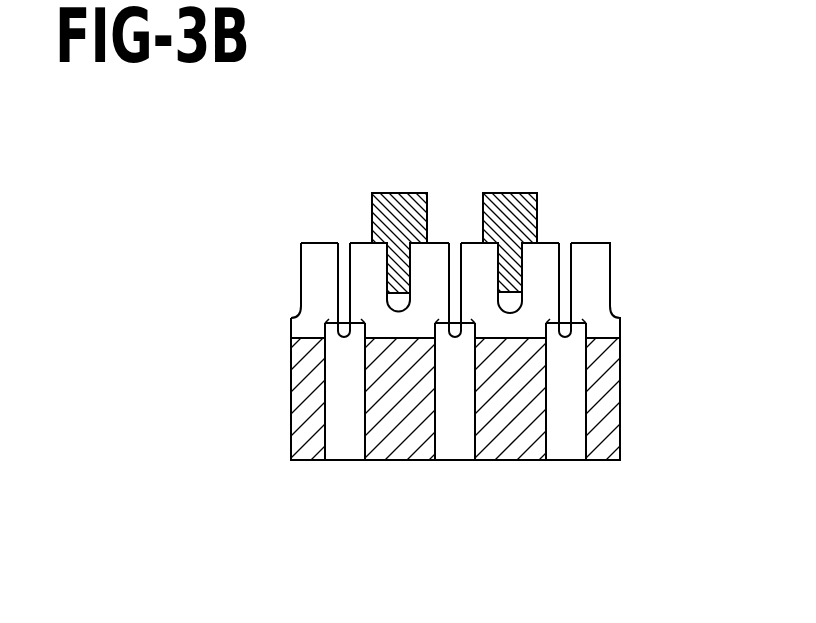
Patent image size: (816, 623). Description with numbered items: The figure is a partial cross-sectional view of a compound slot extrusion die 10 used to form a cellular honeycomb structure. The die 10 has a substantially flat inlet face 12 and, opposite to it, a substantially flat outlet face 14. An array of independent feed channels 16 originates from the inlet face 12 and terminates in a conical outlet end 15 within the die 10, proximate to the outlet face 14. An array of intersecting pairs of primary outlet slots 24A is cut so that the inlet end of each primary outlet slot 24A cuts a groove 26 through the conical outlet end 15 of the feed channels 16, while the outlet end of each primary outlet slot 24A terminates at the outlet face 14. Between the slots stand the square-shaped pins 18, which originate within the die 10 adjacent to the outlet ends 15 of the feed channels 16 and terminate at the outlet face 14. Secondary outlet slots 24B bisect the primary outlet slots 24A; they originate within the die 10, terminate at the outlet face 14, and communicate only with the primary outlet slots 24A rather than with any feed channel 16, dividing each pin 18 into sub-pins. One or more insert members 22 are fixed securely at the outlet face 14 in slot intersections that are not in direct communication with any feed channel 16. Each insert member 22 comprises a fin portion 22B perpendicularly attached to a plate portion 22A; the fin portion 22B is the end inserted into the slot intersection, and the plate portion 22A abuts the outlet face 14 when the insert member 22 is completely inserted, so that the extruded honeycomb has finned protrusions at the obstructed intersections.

The extrusion die 10 is at (605, 487).
The inlet face 12 is at (308, 462).
The outlet face 14 is at (311, 240).
The outlet end 15 is at (328, 321).
The feed channels 16 is at (566, 423).
The pins 18 is at (310, 272).
The insert member 22 is at (405, 192).
The plate portion 22A is at (516, 203).
The fin portion 22B is at (507, 282).
The primary outlet slots 24A is at (455, 247).
The secondary outlet slots 24B is at (401, 300).
The groove 26 is at (572, 340).